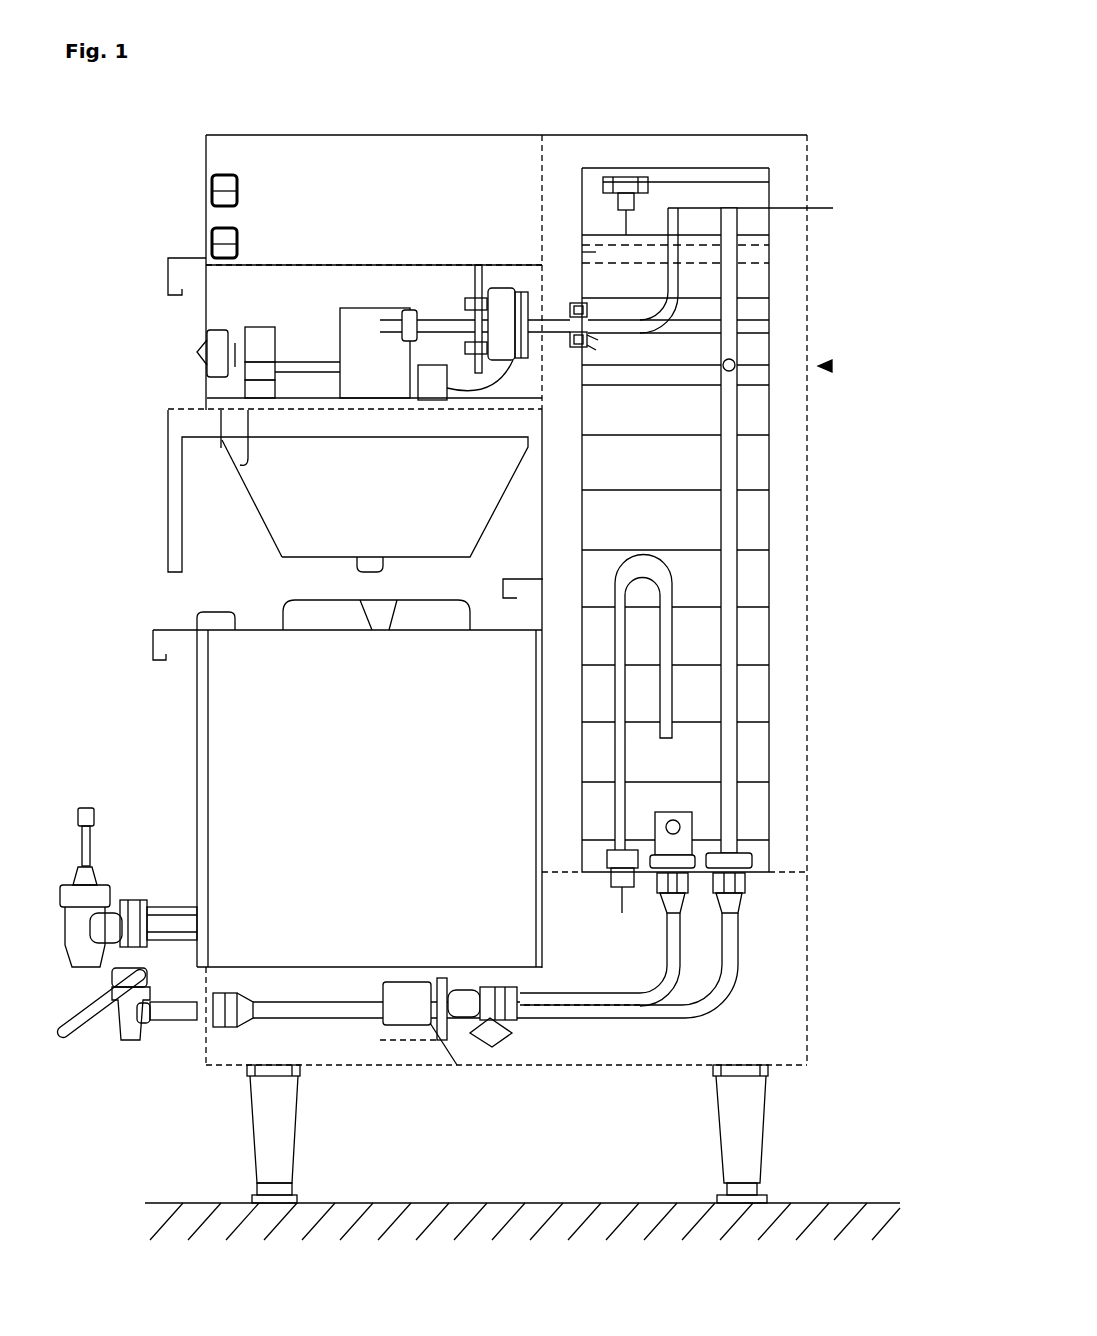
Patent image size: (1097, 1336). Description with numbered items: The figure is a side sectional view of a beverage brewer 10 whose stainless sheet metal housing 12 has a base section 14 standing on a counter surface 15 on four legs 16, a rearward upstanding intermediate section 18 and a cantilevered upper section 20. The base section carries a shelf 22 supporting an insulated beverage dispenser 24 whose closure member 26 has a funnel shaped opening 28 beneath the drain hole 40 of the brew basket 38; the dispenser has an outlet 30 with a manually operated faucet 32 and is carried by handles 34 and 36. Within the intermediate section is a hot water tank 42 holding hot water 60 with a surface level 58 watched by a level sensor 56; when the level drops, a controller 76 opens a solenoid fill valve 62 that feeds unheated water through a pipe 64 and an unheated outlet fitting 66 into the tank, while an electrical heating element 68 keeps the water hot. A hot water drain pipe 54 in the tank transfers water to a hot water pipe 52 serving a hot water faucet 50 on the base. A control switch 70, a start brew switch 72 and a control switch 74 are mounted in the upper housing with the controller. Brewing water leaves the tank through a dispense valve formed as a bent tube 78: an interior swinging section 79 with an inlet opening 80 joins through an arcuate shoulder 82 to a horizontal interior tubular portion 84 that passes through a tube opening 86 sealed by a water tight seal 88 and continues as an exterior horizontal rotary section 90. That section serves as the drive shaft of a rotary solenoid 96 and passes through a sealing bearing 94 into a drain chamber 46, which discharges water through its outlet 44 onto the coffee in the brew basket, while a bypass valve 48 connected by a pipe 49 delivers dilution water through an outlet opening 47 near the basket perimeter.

The beverage brewer 10 is at (830, 366).
The housing 12 is at (210, 133).
The base section 14 is at (199, 1067).
The counter surface 15 is at (538, 1200).
The legs 16 is at (763, 1152).
The intermediate section 18 is at (808, 760).
The upper section 20 is at (375, 135).
The shelf 22 is at (337, 968).
The beverage dispenser 24 is at (232, 790).
The closure member 26 is at (288, 602).
The funnel shaped opening 28 is at (348, 618).
The outlet 30 is at (177, 905).
The faucet 32 is at (73, 952).
The handle 34 is at (157, 655).
The handle 36 is at (532, 577).
The brew basket 38 is at (293, 512).
The drain hole 40 is at (378, 566).
The hot water tank 42 is at (770, 596).
The outlet 44 is at (383, 400).
The drain chamber 46 is at (341, 308).
The outlet opening 47 is at (247, 455).
The bypass valve 48 is at (258, 388).
The pipe 49 is at (340, 367).
The hot water faucet 50 is at (135, 1047).
The hot water pipe 52 is at (737, 993).
The hot water drain pipe 54 is at (740, 523).
The level sensor 56 is at (612, 222).
The surface level 58 is at (752, 225).
The hot water 60 is at (703, 283).
The solenoid fill valve 62 is at (383, 993).
The pipe 64 is at (680, 950).
The unheated outlet fitting 66 is at (692, 838).
The electrical heating element 68 is at (673, 686).
The control switch 70 is at (207, 190).
The start brew switch 72 is at (205, 353).
The control switch 74 is at (207, 248).
The controller 76 is at (428, 367).
The bent tube 78 is at (670, 257).
The interior swinging section 79 is at (581, 252).
The inlet opening 80 is at (672, 212).
The arcuate shoulder 82 is at (740, 330).
The horizontal interior tubular portion 84 is at (570, 312).
The tube opening 86 is at (596, 348).
The water tight seal 88 is at (598, 338).
The exterior horizontal rotary section 90 is at (555, 338).
The sealing bearing 94 is at (417, 307).
The rotary solenoid 96 is at (503, 290).